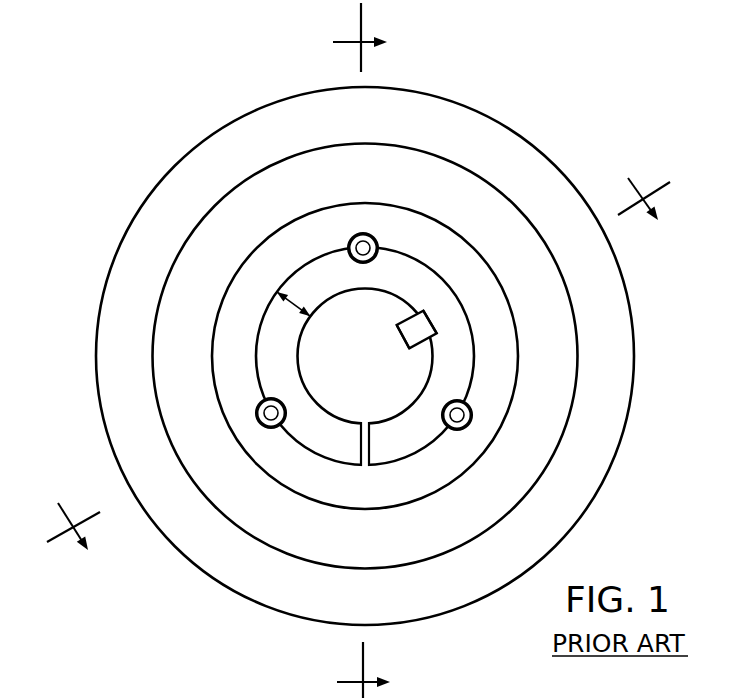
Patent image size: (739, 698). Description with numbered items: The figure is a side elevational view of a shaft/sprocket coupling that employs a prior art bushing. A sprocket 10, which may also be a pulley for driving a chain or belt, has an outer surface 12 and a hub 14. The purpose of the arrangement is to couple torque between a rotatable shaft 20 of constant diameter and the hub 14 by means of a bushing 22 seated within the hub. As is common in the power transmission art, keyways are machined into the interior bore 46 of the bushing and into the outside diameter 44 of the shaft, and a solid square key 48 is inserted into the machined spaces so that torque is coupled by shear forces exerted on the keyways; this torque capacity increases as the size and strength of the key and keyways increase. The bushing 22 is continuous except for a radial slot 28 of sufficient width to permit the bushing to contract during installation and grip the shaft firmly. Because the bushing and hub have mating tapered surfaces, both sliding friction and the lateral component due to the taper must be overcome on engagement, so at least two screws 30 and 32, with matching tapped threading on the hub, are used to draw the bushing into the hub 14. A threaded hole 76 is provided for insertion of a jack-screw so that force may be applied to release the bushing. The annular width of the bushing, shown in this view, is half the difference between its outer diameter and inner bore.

The sprocket 10 is at (84, 169).
The outer surface 12 is at (615, 412).
The hub 14 is at (330, 497).
The rotatable shaft 20 is at (364, 391).
The bushing 22 is at (268, 360).
The radial slot 28 is at (366, 452).
The screw 30 is at (270, 428).
The screw 32 is at (477, 410).
The outside diameter of the shaft 44 is at (415, 349).
The interior bore of the bushing 46 is at (430, 313).
The solid square key 48 is at (437, 330).
The threaded hole 76 is at (379, 242).